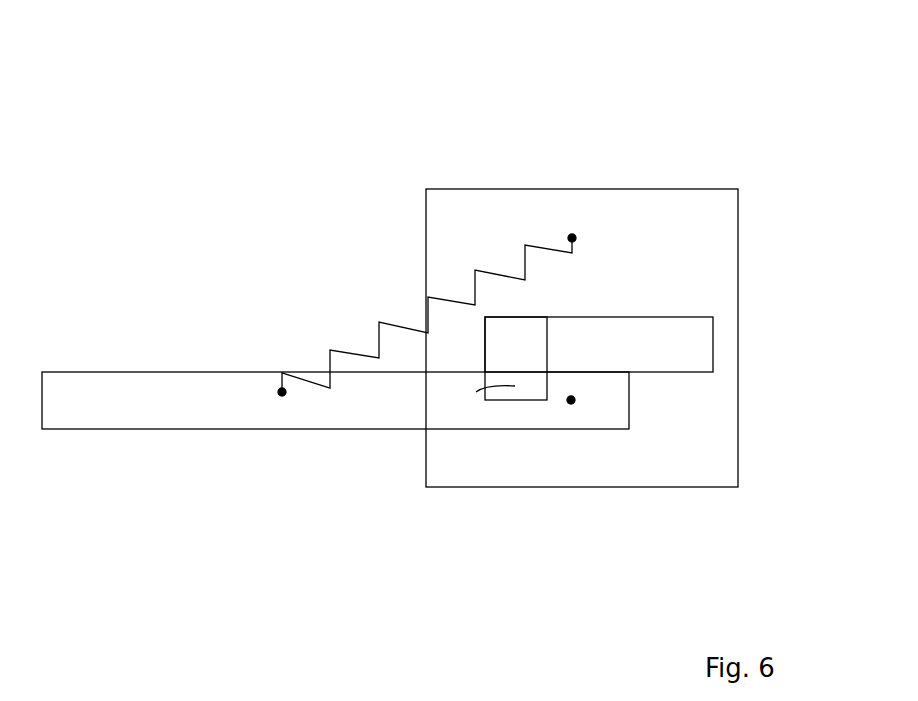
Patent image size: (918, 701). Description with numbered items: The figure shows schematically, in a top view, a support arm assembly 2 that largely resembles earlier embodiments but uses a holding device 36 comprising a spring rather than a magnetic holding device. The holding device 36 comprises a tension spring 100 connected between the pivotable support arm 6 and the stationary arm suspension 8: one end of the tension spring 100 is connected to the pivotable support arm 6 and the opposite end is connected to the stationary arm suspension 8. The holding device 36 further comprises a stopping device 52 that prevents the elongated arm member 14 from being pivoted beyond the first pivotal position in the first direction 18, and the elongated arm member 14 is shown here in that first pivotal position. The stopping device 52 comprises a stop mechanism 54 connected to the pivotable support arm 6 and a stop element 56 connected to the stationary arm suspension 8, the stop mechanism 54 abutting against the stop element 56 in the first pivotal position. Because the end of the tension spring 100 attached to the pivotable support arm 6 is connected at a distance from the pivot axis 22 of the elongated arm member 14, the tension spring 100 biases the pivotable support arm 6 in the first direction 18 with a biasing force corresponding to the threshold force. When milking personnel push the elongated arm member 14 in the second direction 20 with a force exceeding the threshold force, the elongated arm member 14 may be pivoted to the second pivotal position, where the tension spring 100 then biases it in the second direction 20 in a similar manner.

The support arm assembly 2 is at (773, 155).
The pivotable support arm 6 is at (236, 330).
The stationary arm suspension 8 is at (705, 265).
The elongated arm member 14 is at (230, 410).
The first direction 18 is at (182, 217).
The second direction 20 is at (197, 573).
The pivot axis 22 is at (571, 400).
The holding device 36 is at (462, 133).
The stopping device 52 is at (665, 262).
The stop mechanism 54 is at (476, 392).
The stop element 56 is at (517, 343).
The tension spring 100 is at (417, 325).